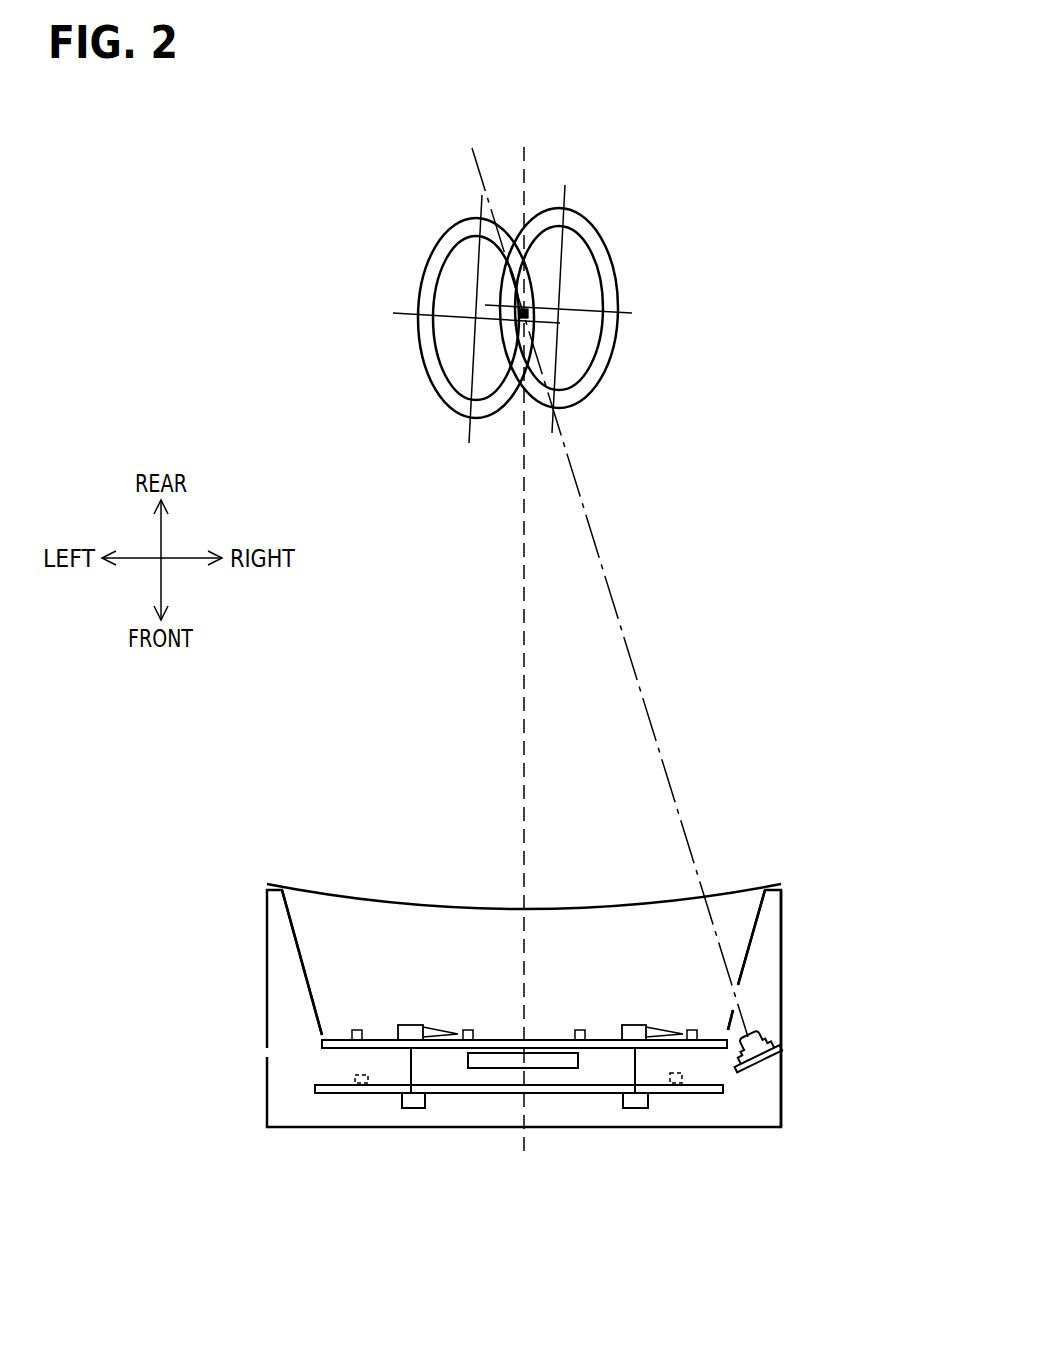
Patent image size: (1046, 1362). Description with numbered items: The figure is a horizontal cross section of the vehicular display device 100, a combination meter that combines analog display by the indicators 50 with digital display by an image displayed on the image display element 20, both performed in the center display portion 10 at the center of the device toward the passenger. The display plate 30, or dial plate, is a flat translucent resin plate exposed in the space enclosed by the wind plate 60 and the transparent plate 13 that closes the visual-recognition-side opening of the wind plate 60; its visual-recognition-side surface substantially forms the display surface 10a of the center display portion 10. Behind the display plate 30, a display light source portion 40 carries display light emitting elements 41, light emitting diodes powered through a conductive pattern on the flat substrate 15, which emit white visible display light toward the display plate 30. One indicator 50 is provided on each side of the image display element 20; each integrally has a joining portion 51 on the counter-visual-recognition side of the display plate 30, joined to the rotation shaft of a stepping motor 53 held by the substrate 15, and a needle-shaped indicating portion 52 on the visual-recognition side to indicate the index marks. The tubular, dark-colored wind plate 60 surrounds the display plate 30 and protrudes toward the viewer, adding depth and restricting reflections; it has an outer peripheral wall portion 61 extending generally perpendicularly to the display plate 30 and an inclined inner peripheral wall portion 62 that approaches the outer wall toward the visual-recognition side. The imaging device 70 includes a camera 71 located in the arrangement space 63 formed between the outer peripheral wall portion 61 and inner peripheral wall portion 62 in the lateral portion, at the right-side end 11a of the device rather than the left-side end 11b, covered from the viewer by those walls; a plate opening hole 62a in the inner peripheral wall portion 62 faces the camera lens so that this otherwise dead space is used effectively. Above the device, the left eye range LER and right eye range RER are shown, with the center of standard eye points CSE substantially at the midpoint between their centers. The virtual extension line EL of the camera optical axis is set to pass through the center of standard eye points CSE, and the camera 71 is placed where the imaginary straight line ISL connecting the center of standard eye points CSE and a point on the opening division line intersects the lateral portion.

The vehicular display device 100 is at (223, 1142).
The center display portion 10 is at (498, 862).
The display surface 10a is at (507, 1036).
The right end portion of display 11a is at (735, 923).
The left end portion of display 11b is at (300, 913).
The transparent plate 13 is at (267, 884).
The substrate 15 is at (318, 1093).
The image display element 20 is at (493, 1068).
The display plate 30 is at (335, 1040).
The display light source portion 40 is at (513, 1141).
The display light emitting element 41 is at (362, 1083).
The indicator 50 is at (529, 931).
The joining portion 51 is at (410, 1063).
The indicating portion 52 is at (432, 1027).
The stepping motor 53 is at (413, 1108).
The wind plate 60 is at (267, 968).
The outer peripheral wall portion 61 is at (782, 937).
The inner peripheral wall portion 62 is at (753, 910).
The plate opening hole 62a is at (740, 991).
The arrangement space 63 is at (767, 1015).
The imaging device 70 is at (801, 1048).
The camera 71 is at (775, 1037).
The left eye range LER is at (430, 250).
The right eye range RER is at (610, 247).
The center of standard eye points CSE is at (524, 310).
The extension line EL is at (616, 592).
The imaginary straight line ISL is at (608, 590).